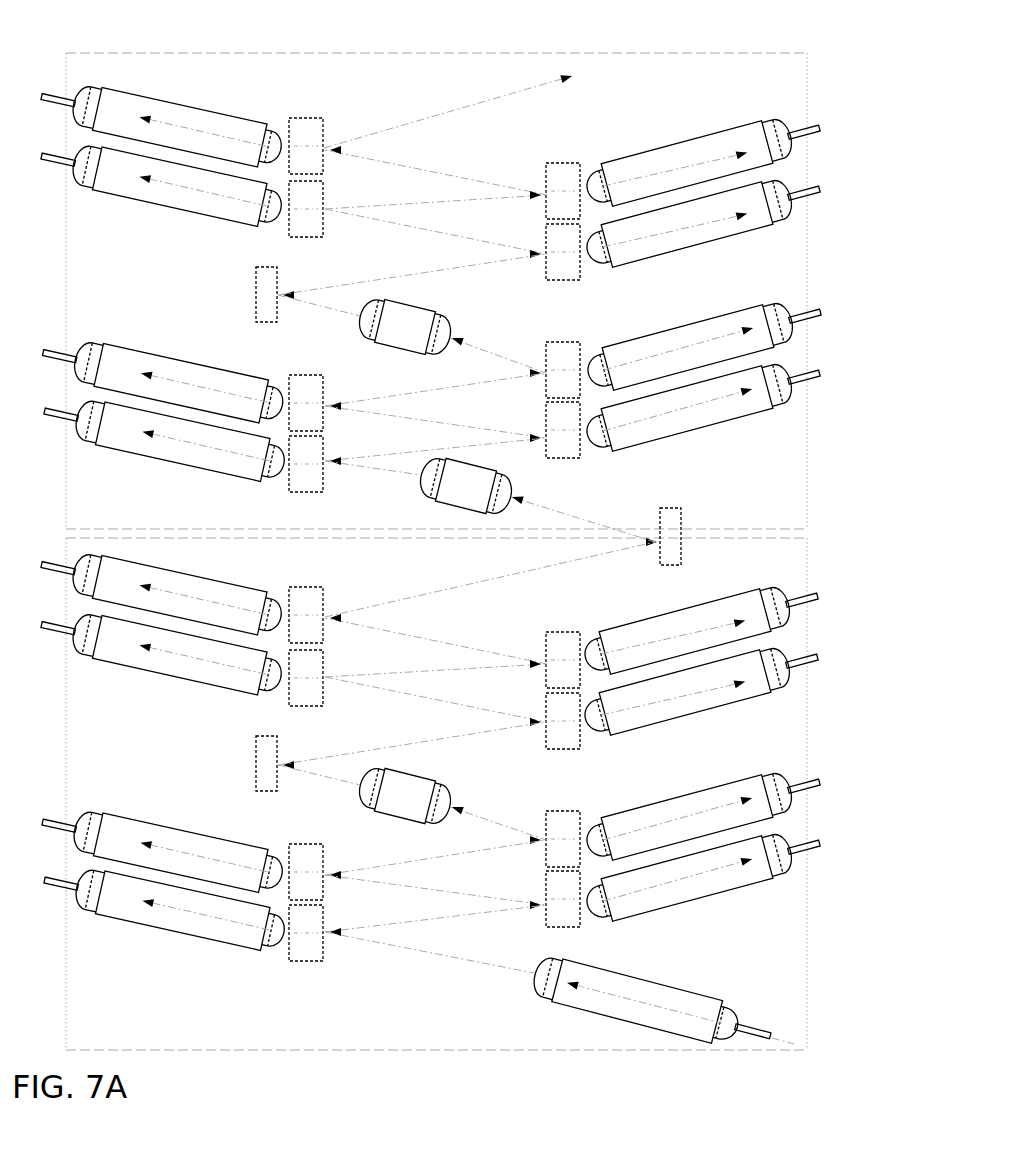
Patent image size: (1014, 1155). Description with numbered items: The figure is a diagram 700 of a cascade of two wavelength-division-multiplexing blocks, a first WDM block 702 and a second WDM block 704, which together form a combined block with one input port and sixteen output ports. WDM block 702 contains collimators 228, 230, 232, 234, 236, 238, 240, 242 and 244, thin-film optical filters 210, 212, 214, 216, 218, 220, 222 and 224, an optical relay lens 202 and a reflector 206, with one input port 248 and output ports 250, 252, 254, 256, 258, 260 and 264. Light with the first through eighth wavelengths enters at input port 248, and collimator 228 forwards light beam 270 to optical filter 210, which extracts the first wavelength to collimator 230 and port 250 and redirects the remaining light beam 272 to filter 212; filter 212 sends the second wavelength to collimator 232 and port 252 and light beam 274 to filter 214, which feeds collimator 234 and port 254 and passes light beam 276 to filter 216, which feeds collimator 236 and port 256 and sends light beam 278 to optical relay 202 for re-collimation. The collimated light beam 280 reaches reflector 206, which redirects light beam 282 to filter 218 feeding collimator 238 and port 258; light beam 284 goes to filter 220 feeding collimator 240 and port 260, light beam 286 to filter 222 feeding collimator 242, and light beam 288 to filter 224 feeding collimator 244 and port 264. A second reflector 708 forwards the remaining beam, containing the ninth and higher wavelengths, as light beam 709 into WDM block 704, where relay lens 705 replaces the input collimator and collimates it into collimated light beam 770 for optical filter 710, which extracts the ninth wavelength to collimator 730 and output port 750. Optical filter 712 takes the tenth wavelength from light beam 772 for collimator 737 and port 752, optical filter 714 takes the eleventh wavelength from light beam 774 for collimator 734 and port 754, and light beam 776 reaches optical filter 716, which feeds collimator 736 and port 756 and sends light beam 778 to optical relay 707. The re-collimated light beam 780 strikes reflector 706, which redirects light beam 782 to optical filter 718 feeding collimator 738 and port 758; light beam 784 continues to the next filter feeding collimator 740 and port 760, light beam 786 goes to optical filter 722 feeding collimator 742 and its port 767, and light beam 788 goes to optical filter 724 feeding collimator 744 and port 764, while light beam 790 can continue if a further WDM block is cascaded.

The diagram 700 is at (690, 22).
The WDM block 702 is at (130, 1033).
The WDM block 704 is at (110, 523).
The reflector 706 is at (256, 300).
The second reflector 708 is at (681, 524).
The light beam 709 is at (568, 513).
The relay lens 705 is at (481, 492).
The optical relay 707 is at (425, 338).
The optical relay 202 is at (423, 805).
The collimator 228 is at (670, 988).
The input port 248 is at (752, 1036).
The reflector 206 is at (256, 769).
The optical filter 710 is at (320, 484).
The optical filter 712 is at (577, 421).
The optical filter 714 is at (320, 394).
The optical filter 716 is at (577, 361).
The optical filter 718 is at (577, 243).
The optical filter 722 is at (577, 182).
The optical filter 724 is at (320, 137).
The collimated light beam 770 is at (320, 229).
The optical filter 210 is at (320, 953).
The optical filter 212 is at (577, 890).
The optical filter 214 is at (320, 863).
The optical filter 216 is at (577, 830).
The optical filter 218 is at (577, 712).
The optical filter 220 is at (320, 698).
The optical filter 222 is at (577, 651).
The optical filter 224 is at (320, 606).
The collimator 730 is at (195, 465).
The collimator 734 is at (187, 358).
The collimator 736 is at (690, 325).
The laser source 737 is at (672, 436).
The collimator 738 is at (680, 249).
The collimator 740 is at (172, 212).
The collimator 742 is at (677, 143).
The collimator 744 is at (186, 103).
The collimator 230 is at (195, 934).
The collimator 232 is at (672, 906).
The collimator 234 is at (187, 827).
The collimator 236 is at (690, 795).
The collimator 238 is at (680, 718).
The collimator 240 is at (172, 681).
The collimator 242 is at (677, 612).
The collimator 244 is at (186, 572).
The output port 750 is at (46, 417).
The output port 752 is at (819, 378).
The output port 754 is at (46, 355).
The output port 756 is at (820, 312).
The output port 758 is at (818, 195).
The output port 760 is at (46, 162).
The output port 764 is at (46, 96).
The fiber output 767 is at (822, 127).
The output port 250 is at (46, 886).
The output port 252 is at (819, 848).
The output port 254 is at (46, 825).
The output port 256 is at (820, 782).
The output port 258 is at (818, 664).
The output port 260 is at (46, 632).
The output port 264 is at (46, 565).
The light beam 772 is at (462, 448).
The light beam 774 is at (388, 415).
The light beam 776 is at (493, 381).
The light beam 778 is at (497, 355).
The collimated light beam 780 is at (342, 312).
The light beam 782 is at (468, 267).
The light beam 784 is at (387, 222).
The light beam 786 is at (470, 200).
The light beam 788 is at (378, 160).
The light beam 790 is at (514, 93).
The light beam 270 is at (452, 958).
The light beam 272 is at (467, 914).
The light beam 274 is at (388, 884).
The light beam 276 is at (493, 850).
The light beam 278 is at (497, 823).
The collimated light beam 280 is at (342, 781).
The light beam 282 is at (467, 737).
The light beam 284 is at (387, 691).
The light beam 286 is at (470, 669).
The light beam 288 is at (377, 628).